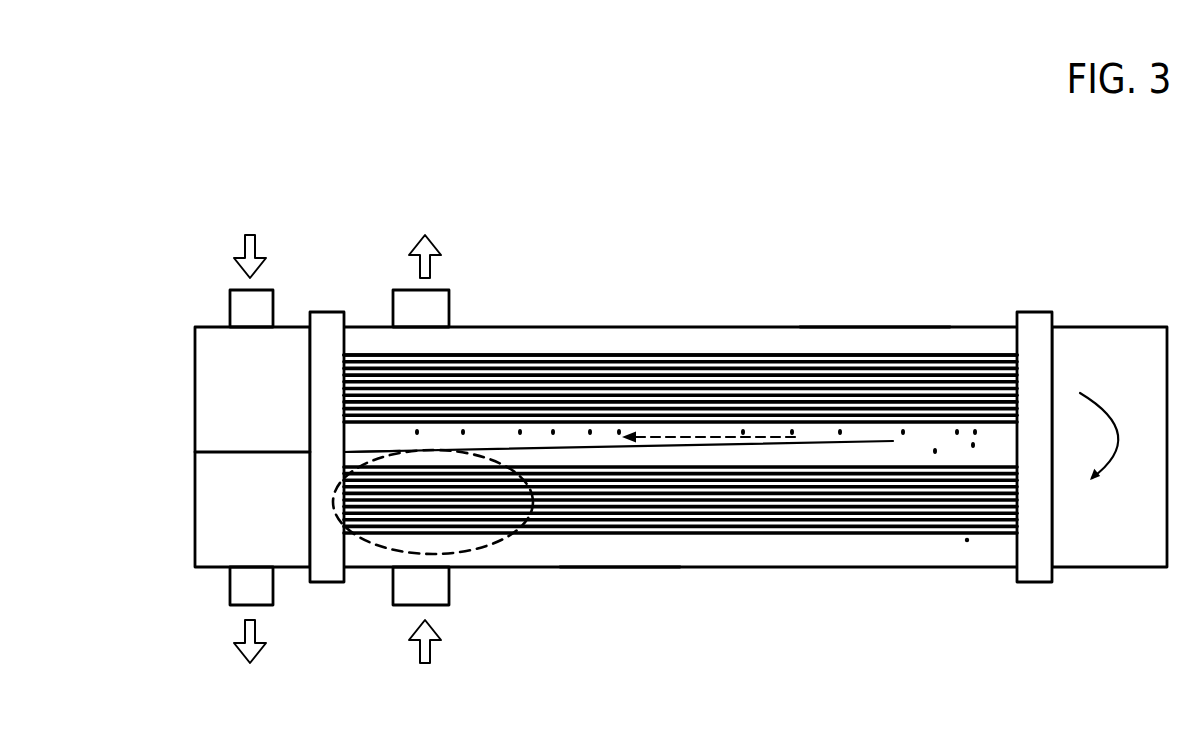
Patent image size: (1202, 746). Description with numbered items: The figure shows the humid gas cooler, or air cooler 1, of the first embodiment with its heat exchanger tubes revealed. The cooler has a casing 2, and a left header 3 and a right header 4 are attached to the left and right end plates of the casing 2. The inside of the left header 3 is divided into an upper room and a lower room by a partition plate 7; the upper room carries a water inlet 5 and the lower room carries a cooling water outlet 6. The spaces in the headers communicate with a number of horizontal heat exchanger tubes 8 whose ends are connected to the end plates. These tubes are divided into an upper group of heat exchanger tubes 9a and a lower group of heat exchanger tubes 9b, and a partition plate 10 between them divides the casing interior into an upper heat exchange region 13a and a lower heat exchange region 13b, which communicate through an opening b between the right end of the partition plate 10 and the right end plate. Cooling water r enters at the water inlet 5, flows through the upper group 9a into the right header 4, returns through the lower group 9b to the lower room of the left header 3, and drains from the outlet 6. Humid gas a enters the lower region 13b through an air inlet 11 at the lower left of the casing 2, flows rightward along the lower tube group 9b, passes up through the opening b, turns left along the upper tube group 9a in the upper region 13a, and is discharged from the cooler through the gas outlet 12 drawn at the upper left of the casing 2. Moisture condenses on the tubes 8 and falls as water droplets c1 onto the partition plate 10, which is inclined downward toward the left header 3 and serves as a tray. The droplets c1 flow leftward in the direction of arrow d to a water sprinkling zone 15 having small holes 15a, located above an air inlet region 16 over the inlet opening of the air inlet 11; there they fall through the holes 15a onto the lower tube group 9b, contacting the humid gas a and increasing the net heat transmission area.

The air cooler 1 is at (656, 431).
The casing 2 is at (783, 327).
The left header 3 is at (290, 327).
The right header 4 is at (1087, 327).
The water inlet 5 is at (240, 312).
The cooling water outlet 6 is at (229, 587).
The partition plate 7 is at (240, 452).
The heat exchanger tubes 8 is at (528, 352).
The upper group of heat exchanger tubes 9a is at (715, 345).
The lower group of heat exchanger tubes 9b is at (738, 545).
The partition plate 10 is at (855, 452).
The air inlet 11 is at (393, 590).
The humid gas outlet 12 is at (450, 290).
The upper heat exchange region 13a is at (866, 335).
The lower heat exchange region 13b is at (617, 553).
The water sprinkling zone 15 is at (477, 452).
The small holes 15a is at (380, 448).
The air inlet region 16 is at (468, 555).
The arrow d is at (712, 440).
The water droplets c1 is at (967, 542).
The opening b is at (953, 437).
The cooling water r is at (230, 449).
The humid gas a is at (421, 449).